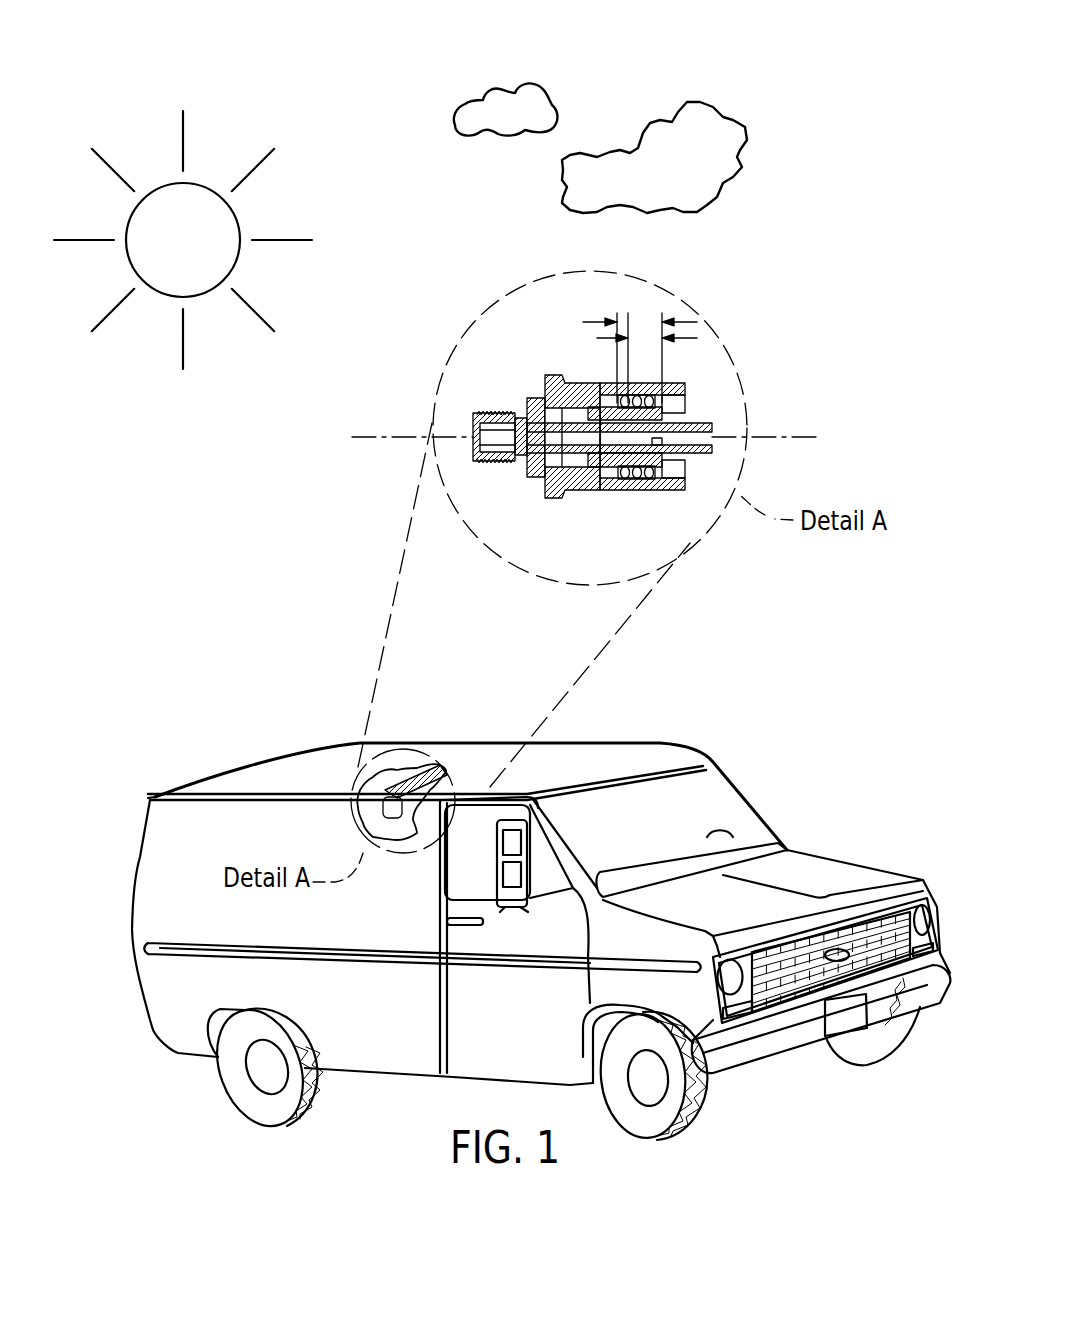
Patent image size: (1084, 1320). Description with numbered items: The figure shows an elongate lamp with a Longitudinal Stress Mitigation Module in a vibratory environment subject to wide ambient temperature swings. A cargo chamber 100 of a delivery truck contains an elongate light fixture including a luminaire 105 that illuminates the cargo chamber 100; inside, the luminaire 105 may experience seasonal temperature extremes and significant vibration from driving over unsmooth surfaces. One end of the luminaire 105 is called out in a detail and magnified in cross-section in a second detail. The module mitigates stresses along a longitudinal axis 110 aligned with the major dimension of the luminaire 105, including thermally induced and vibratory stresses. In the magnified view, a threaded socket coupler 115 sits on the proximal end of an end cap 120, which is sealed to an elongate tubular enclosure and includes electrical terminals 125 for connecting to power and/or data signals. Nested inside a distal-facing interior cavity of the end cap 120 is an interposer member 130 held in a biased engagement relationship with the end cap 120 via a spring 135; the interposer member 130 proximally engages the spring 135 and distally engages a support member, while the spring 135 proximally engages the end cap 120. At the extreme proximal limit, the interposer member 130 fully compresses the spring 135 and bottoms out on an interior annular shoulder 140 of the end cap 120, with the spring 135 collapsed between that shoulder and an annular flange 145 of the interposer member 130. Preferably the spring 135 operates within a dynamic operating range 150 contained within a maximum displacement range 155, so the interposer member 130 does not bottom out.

The cargo chamber 100 is at (610, 737).
The luminaire 105 is at (424, 764).
The longitudinal axis 110 is at (807, 438).
The threaded socket coupler 115 is at (505, 465).
The end cap 120 is at (583, 493).
The electrical terminals 125 is at (485, 438).
The interposer member 130 is at (673, 480).
The spring 135 is at (643, 478).
The interior annular shoulder 140 is at (615, 407).
The annular flange 145 is at (663, 407).
The dynamic operating range 150 is at (645, 342).
The maximum displacement range 155 is at (632, 322).